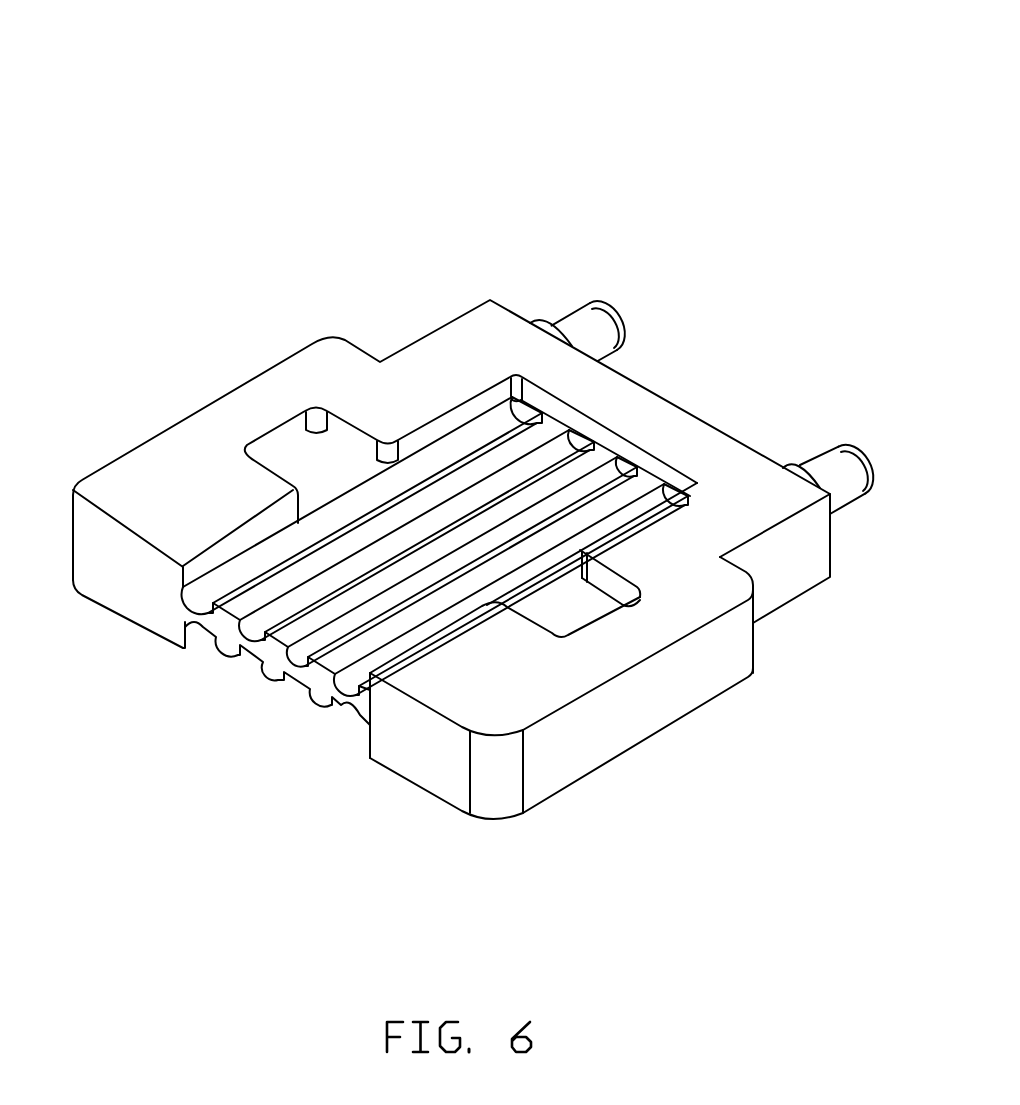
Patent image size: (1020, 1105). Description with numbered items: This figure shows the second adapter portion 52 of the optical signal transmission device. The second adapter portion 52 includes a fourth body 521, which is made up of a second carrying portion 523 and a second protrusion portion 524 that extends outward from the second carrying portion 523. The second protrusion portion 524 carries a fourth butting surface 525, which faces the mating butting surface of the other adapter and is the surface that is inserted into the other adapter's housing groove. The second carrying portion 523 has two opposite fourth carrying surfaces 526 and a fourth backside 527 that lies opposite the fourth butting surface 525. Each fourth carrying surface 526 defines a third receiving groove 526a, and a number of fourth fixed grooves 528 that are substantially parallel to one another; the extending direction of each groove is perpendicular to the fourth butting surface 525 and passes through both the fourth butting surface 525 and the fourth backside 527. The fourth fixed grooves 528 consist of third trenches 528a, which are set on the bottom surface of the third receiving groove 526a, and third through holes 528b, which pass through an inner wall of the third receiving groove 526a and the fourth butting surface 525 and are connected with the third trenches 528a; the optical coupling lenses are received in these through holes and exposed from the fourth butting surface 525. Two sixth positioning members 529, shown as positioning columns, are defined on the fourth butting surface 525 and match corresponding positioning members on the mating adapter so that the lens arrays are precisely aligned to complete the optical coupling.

The second adapter portion 52 is at (490, 120).
The fourth body 521 is at (898, 692).
The second carrying portion 523 is at (665, 705).
The second protrusion portion 524 is at (776, 570).
The fourth butting surface 525 is at (657, 392).
The fourth carrying surface 526 is at (190, 456).
The third receiving groove 526a is at (313, 460).
The fourth backside 527 is at (420, 763).
The fourth fixed grooves 528 is at (267, 793).
The third trenches 528a is at (255, 627).
The third through holes 528b is at (495, 492).
The sixth positioning members 529 is at (842, 467).